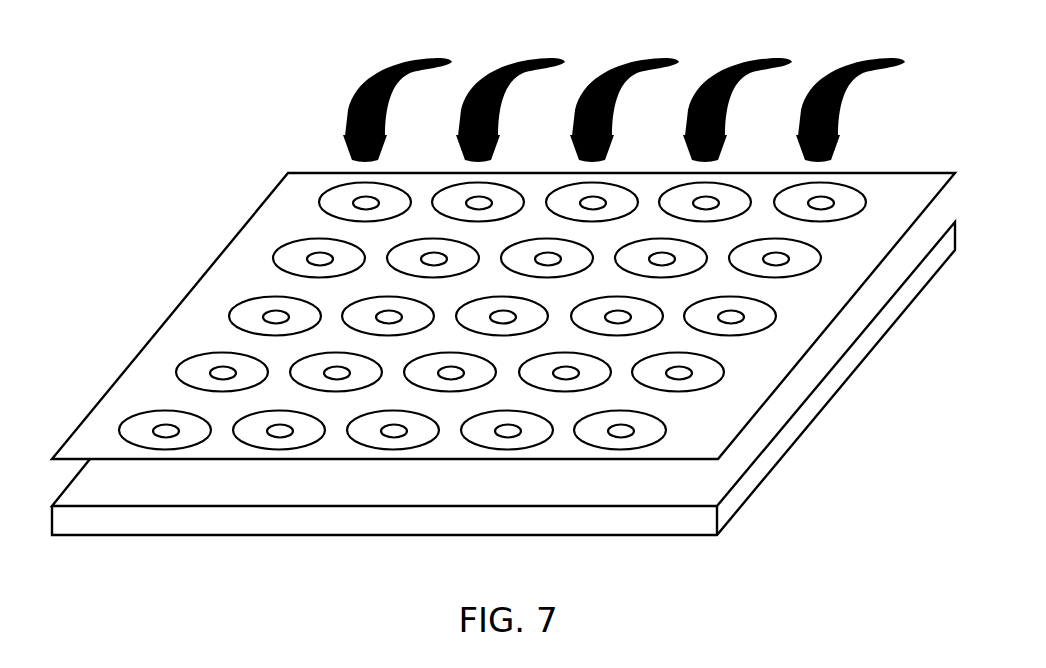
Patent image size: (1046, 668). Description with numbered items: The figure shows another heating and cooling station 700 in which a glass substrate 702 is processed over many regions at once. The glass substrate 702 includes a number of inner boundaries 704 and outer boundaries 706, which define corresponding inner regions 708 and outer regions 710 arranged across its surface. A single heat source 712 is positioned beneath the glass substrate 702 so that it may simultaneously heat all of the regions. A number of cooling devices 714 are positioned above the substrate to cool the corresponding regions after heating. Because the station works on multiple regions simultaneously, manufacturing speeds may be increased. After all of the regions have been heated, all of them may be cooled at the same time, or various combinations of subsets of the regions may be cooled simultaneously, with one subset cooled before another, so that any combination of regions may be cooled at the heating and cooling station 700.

The heating and cooling station 700 is at (138, 97).
The glass substrate 702 is at (803, 358).
The inner boundaries 704 is at (680, 373).
The outer boundaries 706 is at (277, 258).
The inner regions 708 is at (822, 203).
The outer regions 710 is at (193, 377).
The heat source 712 is at (735, 515).
The cooling devices 714 is at (343, 137).